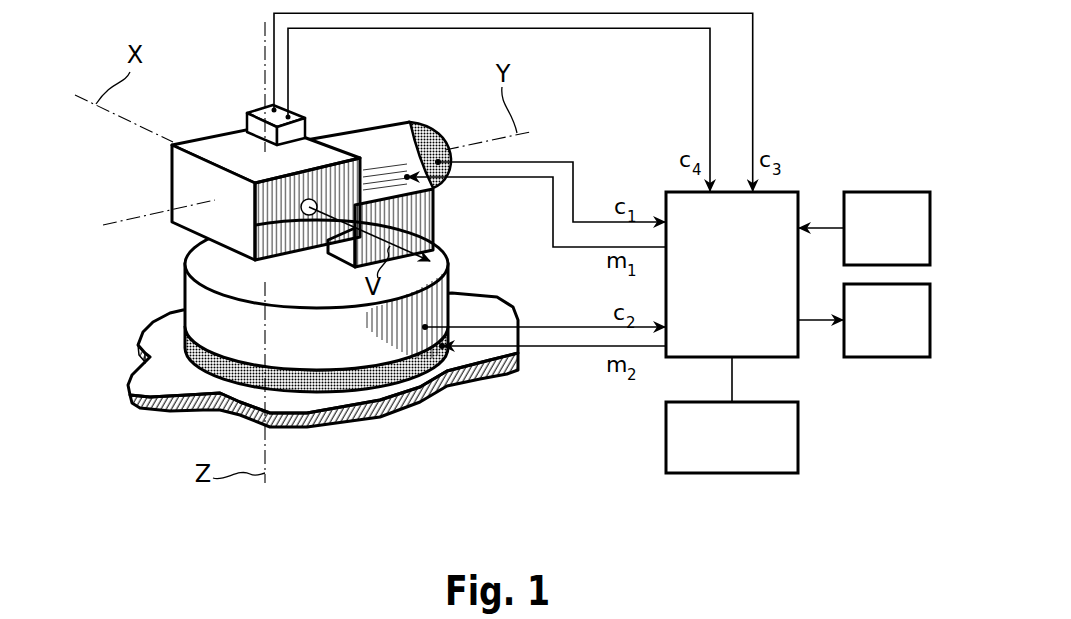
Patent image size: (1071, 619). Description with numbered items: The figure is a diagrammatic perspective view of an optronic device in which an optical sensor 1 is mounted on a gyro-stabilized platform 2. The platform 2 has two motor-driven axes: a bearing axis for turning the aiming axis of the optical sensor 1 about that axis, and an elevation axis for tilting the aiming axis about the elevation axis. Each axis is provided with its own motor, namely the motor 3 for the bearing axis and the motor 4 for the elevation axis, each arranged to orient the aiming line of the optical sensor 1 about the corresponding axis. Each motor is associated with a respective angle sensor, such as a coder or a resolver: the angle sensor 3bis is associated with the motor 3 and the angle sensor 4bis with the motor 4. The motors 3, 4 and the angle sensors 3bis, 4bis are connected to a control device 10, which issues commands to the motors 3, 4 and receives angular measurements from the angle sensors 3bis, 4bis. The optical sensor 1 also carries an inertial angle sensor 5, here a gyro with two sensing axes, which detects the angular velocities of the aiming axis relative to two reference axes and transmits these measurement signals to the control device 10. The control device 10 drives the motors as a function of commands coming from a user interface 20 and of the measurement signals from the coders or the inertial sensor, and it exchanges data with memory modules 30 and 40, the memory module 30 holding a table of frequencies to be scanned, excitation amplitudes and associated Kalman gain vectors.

The optical sensor 1 is at (198, 145).
The gyro-stabilized platform 2 is at (155, 282).
The motor 3 is at (452, 310).
The angle sensor 3bis is at (445, 358).
The motor 4 is at (383, 142).
The angle sensor 4bis is at (425, 118).
The inertial angle sensor 5 is at (260, 112).
The control device 10 is at (732, 274).
The user interface 20 is at (732, 437).
The memory module 30 is at (887, 228).
The memory module 40 is at (887, 320).